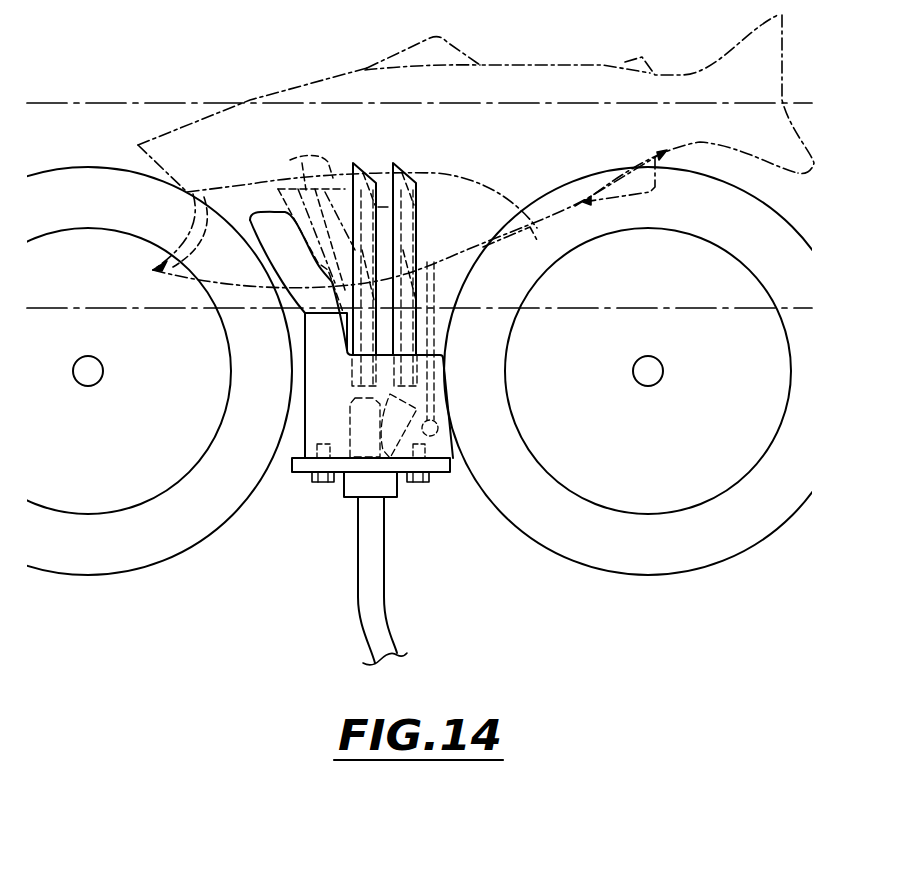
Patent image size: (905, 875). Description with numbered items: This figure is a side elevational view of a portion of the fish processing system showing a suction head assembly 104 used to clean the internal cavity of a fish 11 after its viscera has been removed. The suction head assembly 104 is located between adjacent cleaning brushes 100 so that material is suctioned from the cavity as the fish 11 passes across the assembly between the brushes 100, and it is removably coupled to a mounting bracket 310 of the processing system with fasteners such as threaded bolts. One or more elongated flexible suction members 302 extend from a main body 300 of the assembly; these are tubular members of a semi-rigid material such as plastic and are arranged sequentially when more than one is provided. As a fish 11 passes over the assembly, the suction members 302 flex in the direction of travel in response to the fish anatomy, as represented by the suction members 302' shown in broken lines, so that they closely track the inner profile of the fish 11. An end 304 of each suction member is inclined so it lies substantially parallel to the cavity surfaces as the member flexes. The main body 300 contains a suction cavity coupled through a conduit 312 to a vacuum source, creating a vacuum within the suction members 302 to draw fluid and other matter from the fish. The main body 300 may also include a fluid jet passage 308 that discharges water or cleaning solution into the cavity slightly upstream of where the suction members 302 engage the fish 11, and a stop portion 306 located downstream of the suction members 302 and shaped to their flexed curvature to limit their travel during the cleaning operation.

The fish 11 is at (317, 83).
The cleaning brush 100 is at (112, 173).
The suction head assembly 104 is at (268, 573).
The main body 300 is at (437, 480).
The suction member 302 is at (431, 216).
The suction member in flexed position 302' is at (319, 229).
The end of suction member 304 is at (403, 168).
The stop portion 306 is at (283, 242).
The fluid jet passage 308 is at (432, 373).
The mounting bracket 310 is at (300, 480).
The conduit 312 is at (370, 607).